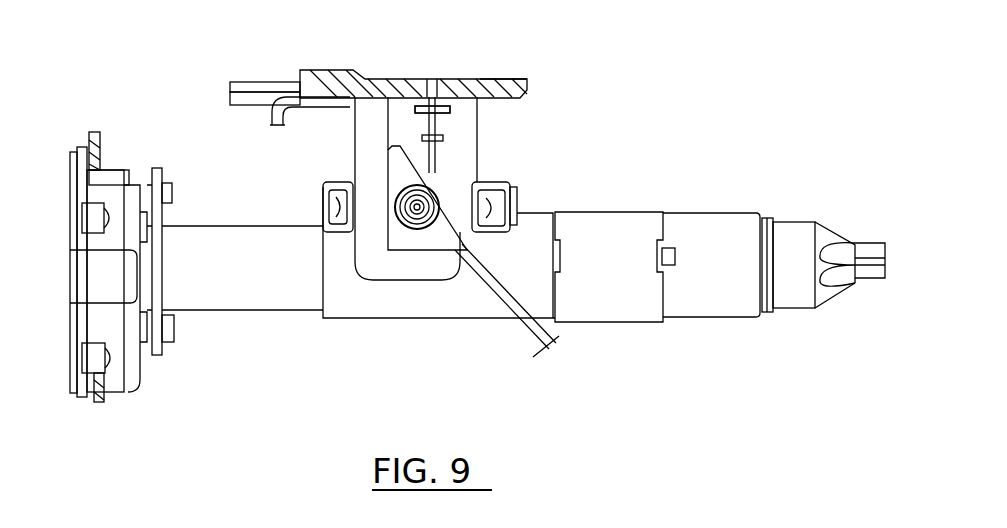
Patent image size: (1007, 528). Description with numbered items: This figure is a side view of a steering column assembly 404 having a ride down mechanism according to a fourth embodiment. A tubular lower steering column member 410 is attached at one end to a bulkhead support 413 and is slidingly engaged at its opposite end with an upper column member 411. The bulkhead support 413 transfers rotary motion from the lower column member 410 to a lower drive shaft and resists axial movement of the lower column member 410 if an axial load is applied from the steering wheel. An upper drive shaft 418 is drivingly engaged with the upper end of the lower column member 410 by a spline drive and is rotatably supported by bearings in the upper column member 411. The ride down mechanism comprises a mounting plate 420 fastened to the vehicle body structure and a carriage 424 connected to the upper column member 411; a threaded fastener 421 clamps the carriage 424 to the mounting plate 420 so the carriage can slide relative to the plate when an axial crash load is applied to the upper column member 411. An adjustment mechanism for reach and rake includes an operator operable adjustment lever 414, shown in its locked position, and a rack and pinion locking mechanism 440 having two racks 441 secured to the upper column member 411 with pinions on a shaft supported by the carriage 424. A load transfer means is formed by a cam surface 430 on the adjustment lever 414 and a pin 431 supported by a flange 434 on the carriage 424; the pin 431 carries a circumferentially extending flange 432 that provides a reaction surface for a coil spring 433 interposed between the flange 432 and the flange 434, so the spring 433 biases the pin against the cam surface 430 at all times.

The steering column assembly 404 is at (636, 86).
The lower steering column member 410 is at (227, 224).
The upper column member 411 is at (705, 318).
The bulkhead support 413 is at (142, 368).
The adjustment lever 414 is at (518, 329).
The upper drive shaft 418 is at (831, 240).
The mounting plate 420 is at (378, 78).
The bolt 421 is at (433, 78).
The carriage 424 is at (345, 318).
The cam surface 430 is at (447, 177).
The pin 431 is at (437, 157).
The circumferentially extending flange 432 is at (400, 138).
The coil spring 433 is at (452, 112).
The flange 434 is at (490, 79).
The rack and pinion locking mechanism 440 is at (528, 242).
The racks 441 is at (522, 209).